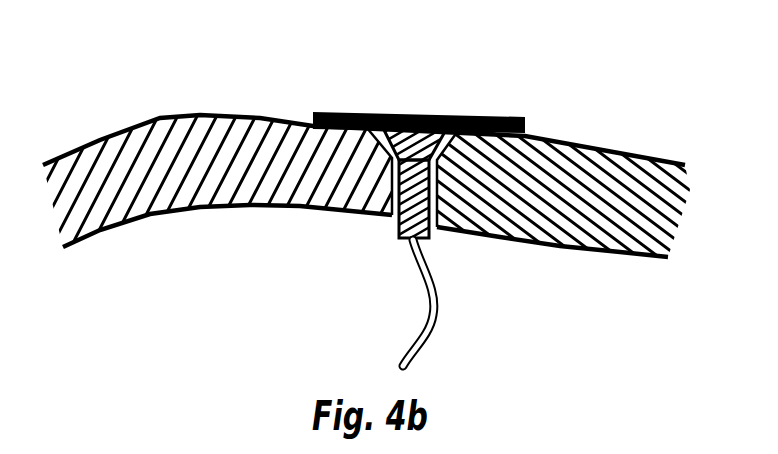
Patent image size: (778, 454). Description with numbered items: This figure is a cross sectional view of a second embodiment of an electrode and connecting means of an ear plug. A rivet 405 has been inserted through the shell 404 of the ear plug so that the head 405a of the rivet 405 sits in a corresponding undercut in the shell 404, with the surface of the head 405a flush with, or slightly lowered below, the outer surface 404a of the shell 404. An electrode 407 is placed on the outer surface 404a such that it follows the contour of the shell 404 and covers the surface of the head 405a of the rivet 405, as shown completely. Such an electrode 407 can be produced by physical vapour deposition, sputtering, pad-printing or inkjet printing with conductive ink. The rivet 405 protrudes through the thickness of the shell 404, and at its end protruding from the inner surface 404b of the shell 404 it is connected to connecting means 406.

The shell 404 is at (142, 180).
The outer surface 404a is at (160, 118).
The inner surface 404b is at (588, 250).
The rivet 405 is at (406, 228).
The head 405a is at (410, 128).
The connecting means 406 is at (430, 307).
The electrode 407 is at (512, 118).